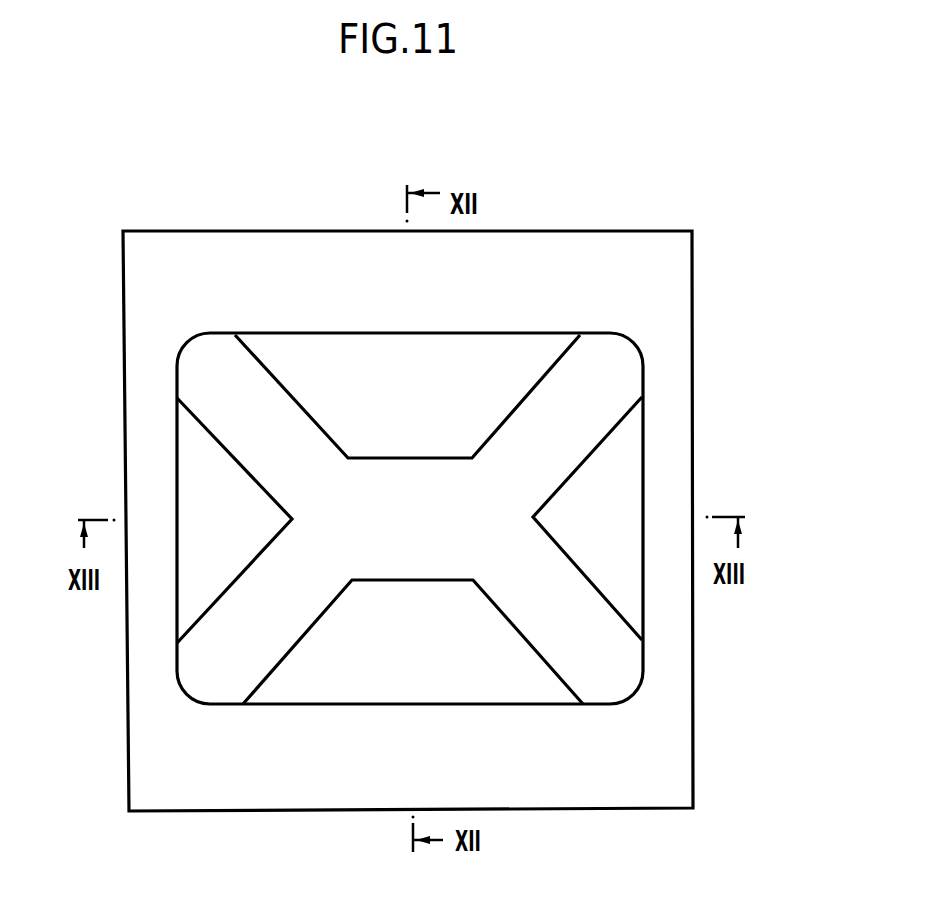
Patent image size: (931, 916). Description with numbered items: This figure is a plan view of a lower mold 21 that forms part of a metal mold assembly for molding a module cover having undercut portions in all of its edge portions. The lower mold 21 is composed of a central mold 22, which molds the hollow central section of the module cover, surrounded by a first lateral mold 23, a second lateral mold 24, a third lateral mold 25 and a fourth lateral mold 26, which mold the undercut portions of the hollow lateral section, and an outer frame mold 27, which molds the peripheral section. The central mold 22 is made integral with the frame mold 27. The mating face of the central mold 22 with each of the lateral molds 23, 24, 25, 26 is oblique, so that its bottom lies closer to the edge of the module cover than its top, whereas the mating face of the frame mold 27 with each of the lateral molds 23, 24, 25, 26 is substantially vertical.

The lower mold 21 is at (702, 702).
The central mold 22 is at (193, 668).
The first lateral mold 23 is at (193, 463).
The second lateral mold 24 is at (618, 488).
The third lateral mold 25 is at (460, 348).
The fourth lateral mold 26 is at (527, 687).
The frame mold 27 is at (228, 790).